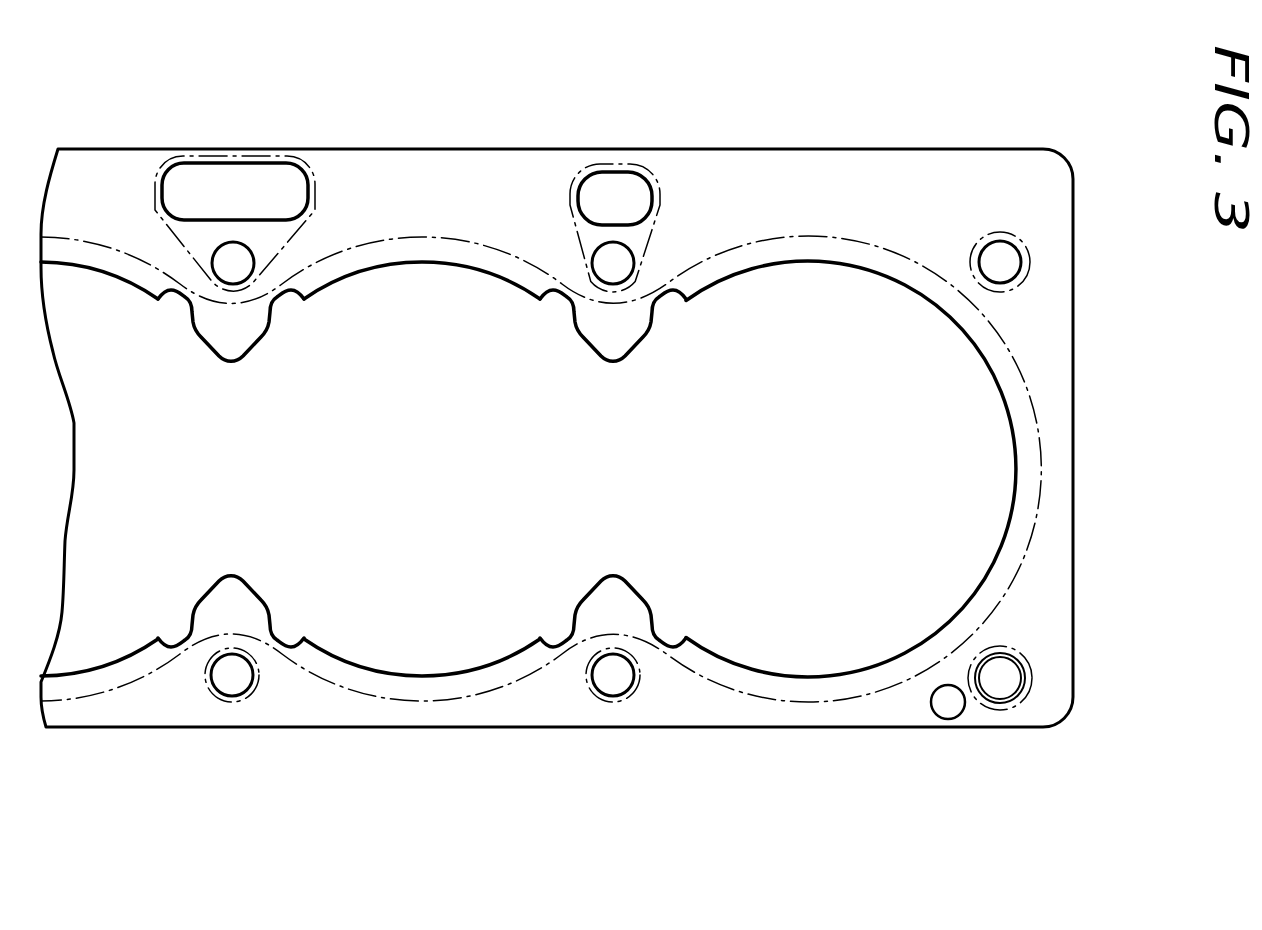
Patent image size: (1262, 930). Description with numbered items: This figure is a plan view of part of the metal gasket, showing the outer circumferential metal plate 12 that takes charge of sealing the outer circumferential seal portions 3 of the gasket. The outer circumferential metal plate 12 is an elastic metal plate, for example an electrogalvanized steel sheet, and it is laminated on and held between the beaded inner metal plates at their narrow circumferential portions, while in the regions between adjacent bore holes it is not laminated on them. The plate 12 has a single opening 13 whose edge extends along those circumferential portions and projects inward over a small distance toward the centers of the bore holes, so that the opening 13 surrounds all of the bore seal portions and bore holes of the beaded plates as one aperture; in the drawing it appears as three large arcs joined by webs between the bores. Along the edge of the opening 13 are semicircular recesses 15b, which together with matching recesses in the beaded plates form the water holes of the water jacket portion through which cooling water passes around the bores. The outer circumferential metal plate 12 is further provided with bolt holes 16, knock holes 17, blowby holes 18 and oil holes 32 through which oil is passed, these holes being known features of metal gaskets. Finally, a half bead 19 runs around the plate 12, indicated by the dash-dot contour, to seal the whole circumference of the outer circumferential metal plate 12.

The outer circumferential seal portions 3 is at (603, 438).
The outer circumferential metal plate 12 is at (867, 195).
The opening 13 is at (845, 267).
The semicircular recesses 15b is at (177, 303).
The bolt holes 16 is at (235, 272).
The knock holes 17 is at (1017, 678).
The blowby holes 18 is at (224, 180).
The half beads 19 is at (1023, 371).
The oil holes 32 is at (942, 718).